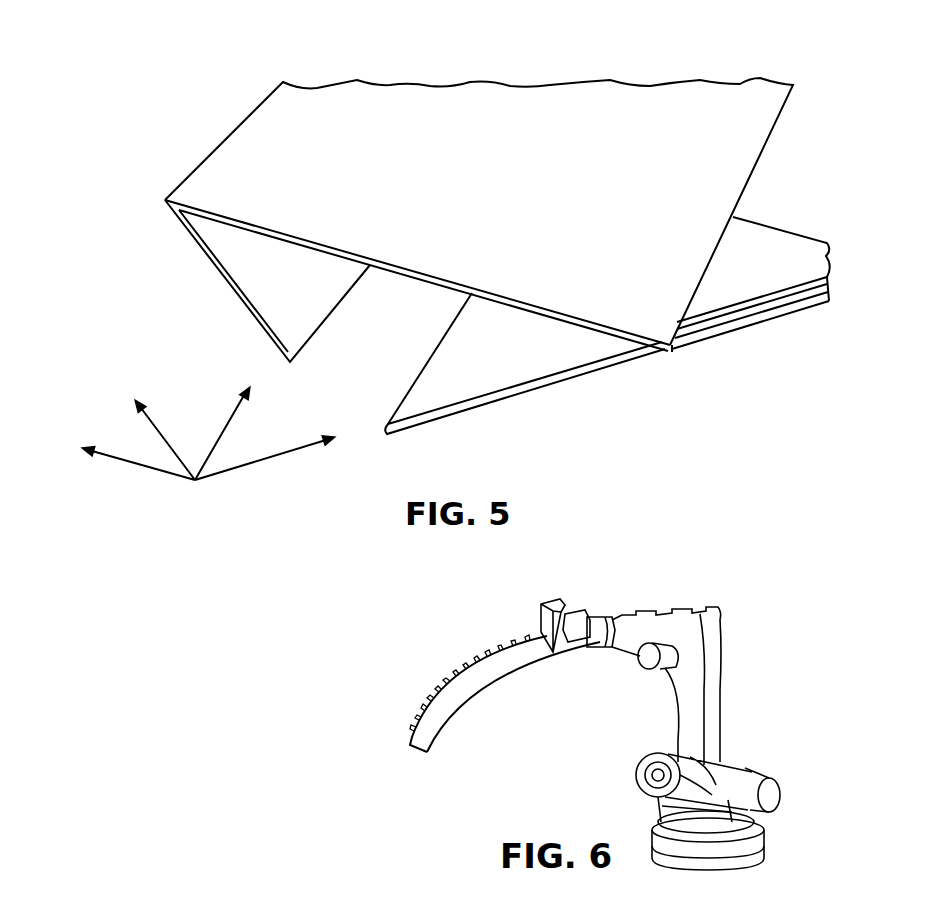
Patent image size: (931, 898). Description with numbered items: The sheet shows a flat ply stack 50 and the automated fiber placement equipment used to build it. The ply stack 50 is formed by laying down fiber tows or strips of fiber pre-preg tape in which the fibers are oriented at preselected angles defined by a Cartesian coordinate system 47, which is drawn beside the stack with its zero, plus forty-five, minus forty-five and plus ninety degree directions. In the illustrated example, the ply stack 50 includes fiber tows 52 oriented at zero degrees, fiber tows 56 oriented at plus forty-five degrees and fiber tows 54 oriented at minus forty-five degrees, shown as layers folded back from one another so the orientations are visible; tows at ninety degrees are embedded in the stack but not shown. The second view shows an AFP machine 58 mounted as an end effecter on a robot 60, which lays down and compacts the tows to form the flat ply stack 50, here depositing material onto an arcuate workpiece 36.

In FIG. 5, the flat ply stack 50 is at (210, 115).
In FIG. 5, the fiber tows oriented at 0 degrees 52 is at (768, 60).
In FIG. 5, the fiber tows oriented at −45 degrees 54 is at (212, 277).
In FIG. 5, the fiber tows oriented at +45 degrees 56 is at (593, 373).
In FIG. 5, the Cartesian coordinate system 47 is at (208, 493).
In FIG. 6, the AFP machine 58 is at (528, 620).
In FIG. 6, the arcuate composite part 36 is at (443, 719).
In FIG. 6, the robot 60 is at (760, 717).